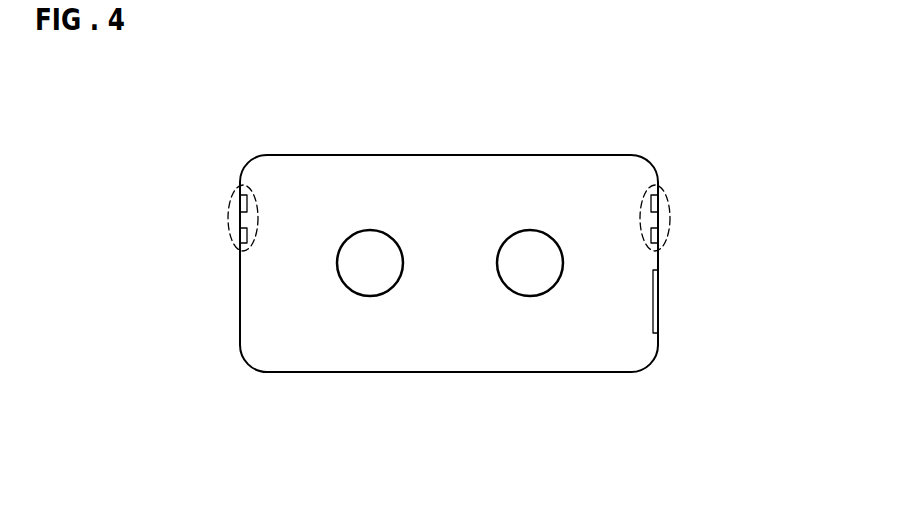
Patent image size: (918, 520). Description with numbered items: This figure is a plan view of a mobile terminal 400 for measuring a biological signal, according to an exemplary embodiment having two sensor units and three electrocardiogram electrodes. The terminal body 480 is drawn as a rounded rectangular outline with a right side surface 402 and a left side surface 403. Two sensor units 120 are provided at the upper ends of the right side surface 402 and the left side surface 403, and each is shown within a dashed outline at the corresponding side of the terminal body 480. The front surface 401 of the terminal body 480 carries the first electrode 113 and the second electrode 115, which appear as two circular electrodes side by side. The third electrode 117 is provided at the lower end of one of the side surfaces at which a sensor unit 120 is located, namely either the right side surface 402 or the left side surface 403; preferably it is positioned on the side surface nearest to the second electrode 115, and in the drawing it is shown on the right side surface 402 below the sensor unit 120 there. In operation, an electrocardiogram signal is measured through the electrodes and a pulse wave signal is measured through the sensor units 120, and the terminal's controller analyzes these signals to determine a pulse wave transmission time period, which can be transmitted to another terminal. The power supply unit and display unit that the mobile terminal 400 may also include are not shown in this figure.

The mobile terminal 400 is at (712, 106).
The front surface 401 is at (367, 170).
The terminal body 480 is at (508, 155).
The right side surface 402 is at (658, 342).
The left side surface 403 is at (240, 317).
The sensor unit 120 is at (228, 223).
The third electrode 117 is at (658, 302).
The first electrode 113 is at (370, 297).
The second electrode 115 is at (530, 297).